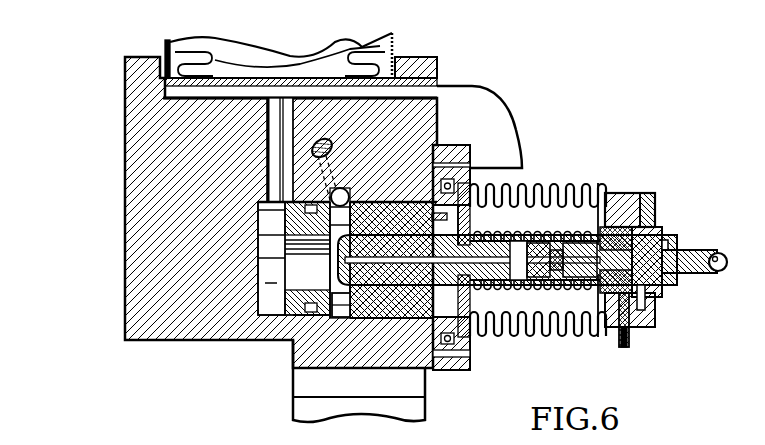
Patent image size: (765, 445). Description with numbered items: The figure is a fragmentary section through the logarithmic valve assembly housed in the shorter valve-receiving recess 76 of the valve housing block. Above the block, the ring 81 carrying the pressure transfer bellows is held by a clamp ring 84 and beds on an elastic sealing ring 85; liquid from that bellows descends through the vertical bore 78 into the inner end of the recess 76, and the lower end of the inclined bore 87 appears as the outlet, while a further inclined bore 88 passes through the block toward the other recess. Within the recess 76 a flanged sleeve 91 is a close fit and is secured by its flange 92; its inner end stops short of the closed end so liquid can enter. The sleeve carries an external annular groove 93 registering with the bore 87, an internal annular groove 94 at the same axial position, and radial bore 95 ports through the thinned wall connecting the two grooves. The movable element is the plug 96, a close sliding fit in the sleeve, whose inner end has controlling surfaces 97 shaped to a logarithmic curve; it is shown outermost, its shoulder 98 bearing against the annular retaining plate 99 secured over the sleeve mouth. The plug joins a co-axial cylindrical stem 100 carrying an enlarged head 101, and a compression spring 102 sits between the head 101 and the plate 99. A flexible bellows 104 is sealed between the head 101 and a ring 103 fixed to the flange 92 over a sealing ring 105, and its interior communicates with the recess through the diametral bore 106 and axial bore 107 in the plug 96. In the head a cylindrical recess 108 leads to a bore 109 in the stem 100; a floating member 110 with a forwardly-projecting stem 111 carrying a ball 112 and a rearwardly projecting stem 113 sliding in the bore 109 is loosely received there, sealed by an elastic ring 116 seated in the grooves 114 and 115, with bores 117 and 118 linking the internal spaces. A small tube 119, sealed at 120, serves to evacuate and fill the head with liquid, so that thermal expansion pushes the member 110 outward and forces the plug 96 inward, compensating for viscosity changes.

The valve-receiving recess 76 is at (274, 303).
The vertical bore 78 is at (280, 100).
The ring 81 is at (410, 80).
The clamp ring 84 is at (407, 57).
The elastic sealing ring 85 is at (410, 93).
The inclined bore 87 is at (437, 108).
The inclined bore 88 is at (324, 141).
The flanged sleeve 91 is at (395, 320).
The flange 92 is at (436, 370).
The external annular groove 93 is at (328, 305).
The internal annular groove 94 is at (303, 270).
The radial bore 95 is at (437, 141).
The plug 96 is at (379, 377).
The controlling surfaces 97 is at (368, 300).
The shoulder 98 is at (470, 165).
The annular retaining plate 99 is at (462, 202).
The cylindrical stem 100 is at (546, 283).
The enlarged head 101 is at (641, 200).
The compression spring 102 is at (549, 247).
The ring 103 is at (472, 364).
The flexible bellows 104 is at (547, 186).
The sealing ring 105 is at (470, 350).
The diametral bore 106 is at (518, 247).
The axial bore 107 is at (477, 279).
The cylindrical recess 108 is at (652, 195).
The bore 109 is at (576, 283).
The floating member 110 is at (668, 236).
The forwardly-projecting stem 111 is at (698, 273).
The ball 112 is at (724, 254).
The rearwardly projecting cylindrical stem 113 is at (616, 212).
The annular groove 114 is at (652, 322).
The complementary groove 115 is at (658, 292).
The ring 116 is at (660, 226).
The diametral bore 117 is at (668, 246).
The axial bore 118 is at (612, 322).
The small tube 119 is at (630, 345).
The seal 120 is at (625, 350).